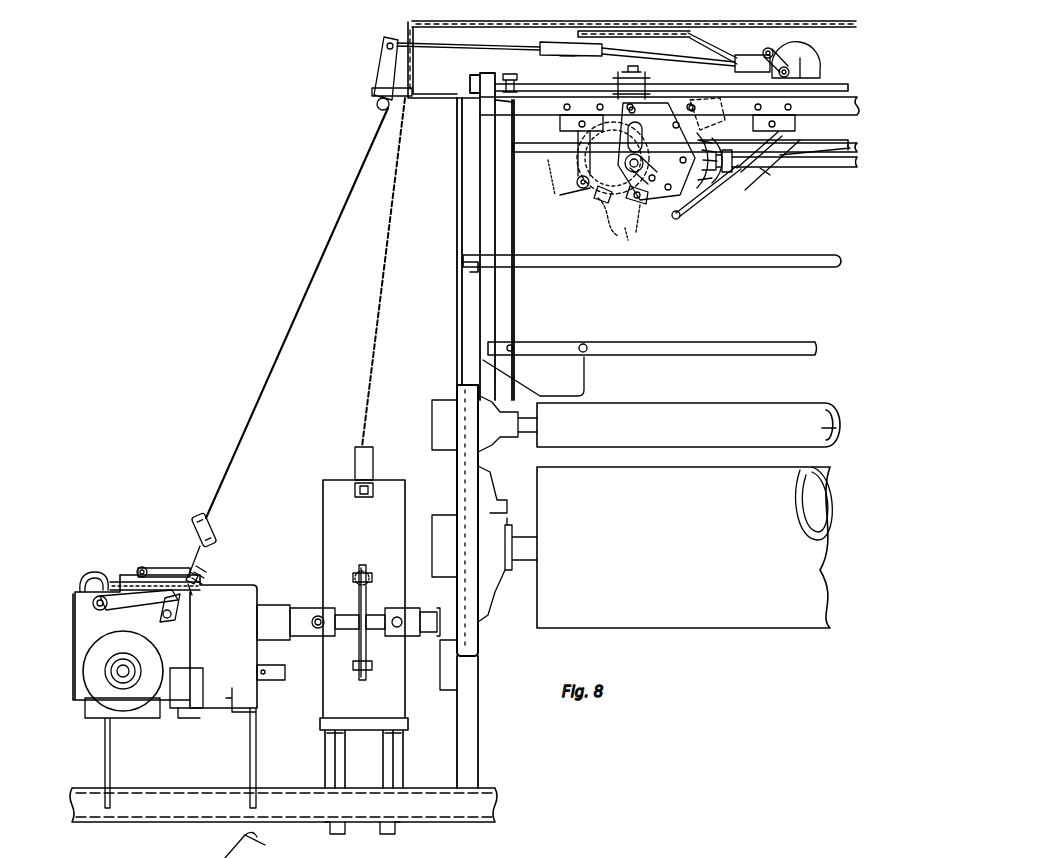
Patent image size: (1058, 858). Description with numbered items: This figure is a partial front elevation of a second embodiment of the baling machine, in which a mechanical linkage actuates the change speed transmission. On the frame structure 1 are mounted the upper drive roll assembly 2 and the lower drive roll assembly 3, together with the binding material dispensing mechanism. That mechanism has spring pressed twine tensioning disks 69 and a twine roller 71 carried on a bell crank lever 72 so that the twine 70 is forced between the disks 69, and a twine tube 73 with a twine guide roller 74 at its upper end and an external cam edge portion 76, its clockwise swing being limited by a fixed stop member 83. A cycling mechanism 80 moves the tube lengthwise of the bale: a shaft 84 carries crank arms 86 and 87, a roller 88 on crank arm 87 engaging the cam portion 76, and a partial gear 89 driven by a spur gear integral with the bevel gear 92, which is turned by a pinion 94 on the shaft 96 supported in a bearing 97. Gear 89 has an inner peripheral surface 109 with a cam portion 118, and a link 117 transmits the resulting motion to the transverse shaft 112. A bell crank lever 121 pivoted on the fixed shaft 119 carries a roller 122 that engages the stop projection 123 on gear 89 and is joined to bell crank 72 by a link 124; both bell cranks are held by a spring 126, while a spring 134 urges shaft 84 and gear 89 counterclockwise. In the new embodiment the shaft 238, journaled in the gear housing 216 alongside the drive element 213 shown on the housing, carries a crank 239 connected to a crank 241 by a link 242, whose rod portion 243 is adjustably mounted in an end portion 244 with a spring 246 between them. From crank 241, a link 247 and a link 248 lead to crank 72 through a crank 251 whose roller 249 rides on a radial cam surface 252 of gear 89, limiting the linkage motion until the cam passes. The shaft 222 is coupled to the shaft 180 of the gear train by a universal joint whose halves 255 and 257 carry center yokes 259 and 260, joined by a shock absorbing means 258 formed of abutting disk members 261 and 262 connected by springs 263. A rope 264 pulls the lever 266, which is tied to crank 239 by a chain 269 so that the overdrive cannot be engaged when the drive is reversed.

The frame structure 1 is at (453, 826).
The upper drive roll assembly 2 is at (652, 436).
The lower drive roll assembly 3 is at (629, 542).
The twine tensioning disks 69 is at (815, 59).
The twine 70 is at (732, 56).
The twine roller 71 is at (767, 48).
The bell crank lever 72 is at (792, 52).
The twine tube 73 is at (840, 172).
The twine guide roller 74 is at (655, 70).
The cam edge portion 76 is at (750, 193).
The cycling mechanism 80 is at (830, 148).
The stop member 83 is at (584, 344).
The shaft 84 is at (611, 204).
The crank arm 86 is at (656, 151).
The crank arm 87 is at (600, 196).
The roller 88 is at (577, 180).
The partial gear 89 is at (641, 198).
The bevel gear 92 is at (710, 190).
The pinion 94 is at (732, 174).
The shaft 96 is at (795, 168).
The bearing 97 is at (757, 170).
The inner peripheral surface 109 is at (578, 160).
The transverse shaft 112 is at (526, 77).
The link 117 is at (648, 120).
The cam portion 118 is at (614, 221).
The fixed shaft 119 is at (680, 218).
The bell crank lever 121 is at (651, 224).
The roller 122 is at (658, 171).
The stop projection 123 is at (632, 242).
The link 124 is at (714, 216).
The spring 126 is at (745, 138).
The spring 134 is at (709, 114).
The shaft 180 is at (433, 612).
The motor 213 is at (135, 671).
The gear housing 216 is at (182, 712).
The shaft 222 is at (284, 604).
The shaft 238 is at (100, 610).
The crank 239 is at (165, 620).
The crank 241 is at (384, 62).
The link 242 is at (318, 264).
The rod portion 243 is at (210, 556).
The end portion 244 is at (201, 510).
The spring 246 is at (188, 558).
The link 247 is at (448, 47).
The link 248 is at (690, 42).
The roller 249 is at (559, 192).
The crank 251 is at (564, 132).
The radial cam surface 252 is at (586, 195).
The universal joint half 255 is at (309, 638).
The universal joint half 257 is at (414, 638).
The shock absorbing means 258 is at (386, 708).
The center yoke 259 is at (340, 614).
The center yoke 260 is at (380, 614).
The disk member 261 is at (361, 564).
The disk member 262 is at (365, 572).
The springs 263 is at (354, 576).
The rope 264 is at (140, 568).
The lever 266 is at (156, 566).
The chain 269 is at (108, 569).